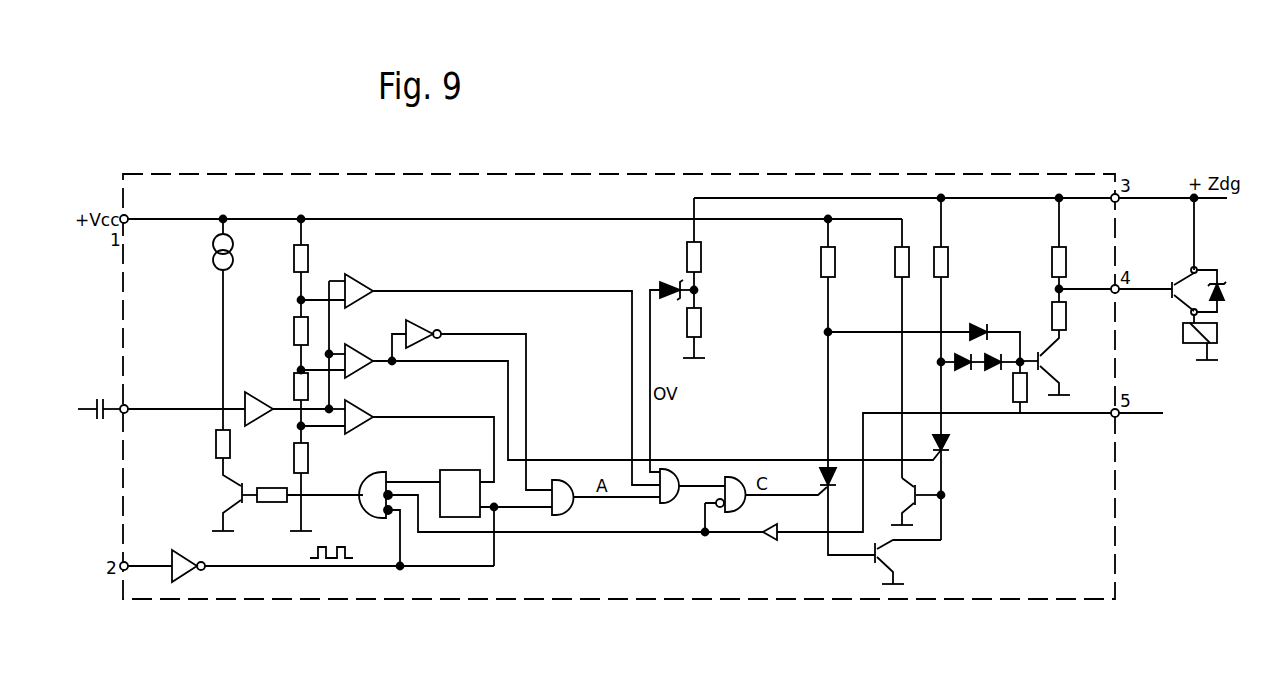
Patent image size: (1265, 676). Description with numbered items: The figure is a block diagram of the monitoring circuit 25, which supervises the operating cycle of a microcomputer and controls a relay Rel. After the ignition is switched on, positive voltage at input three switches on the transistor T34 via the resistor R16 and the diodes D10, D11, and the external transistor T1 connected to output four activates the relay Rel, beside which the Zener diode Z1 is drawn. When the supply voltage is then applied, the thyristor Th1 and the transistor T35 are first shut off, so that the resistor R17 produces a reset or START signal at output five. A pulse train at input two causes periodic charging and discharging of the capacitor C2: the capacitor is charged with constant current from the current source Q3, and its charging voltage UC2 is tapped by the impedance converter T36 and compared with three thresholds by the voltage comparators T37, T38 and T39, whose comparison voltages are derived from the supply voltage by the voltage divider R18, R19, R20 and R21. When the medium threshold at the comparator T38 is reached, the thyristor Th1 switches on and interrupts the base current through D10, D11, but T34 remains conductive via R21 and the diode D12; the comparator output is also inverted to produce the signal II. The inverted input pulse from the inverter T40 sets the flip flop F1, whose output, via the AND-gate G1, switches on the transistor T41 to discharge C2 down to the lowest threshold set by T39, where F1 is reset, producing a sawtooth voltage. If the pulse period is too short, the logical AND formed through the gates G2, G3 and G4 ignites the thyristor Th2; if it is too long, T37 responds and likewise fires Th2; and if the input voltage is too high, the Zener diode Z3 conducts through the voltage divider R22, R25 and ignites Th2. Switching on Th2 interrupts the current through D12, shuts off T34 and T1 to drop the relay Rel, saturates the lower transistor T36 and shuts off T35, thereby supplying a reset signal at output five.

The monitoring circuit 25 is at (790, 178).
The current source Q3 is at (213, 256).
The voltage divider resistor R18 is at (294, 258).
The voltage divider resistor R19 is at (294, 328).
The voltage divider resistor R20 is at (294, 384).
The resistor R21 is at (308, 462).
The voltage divider resistor R22 is at (701, 258).
The voltage divider resistor R25 is at (711, 333).
The resistor R17 is at (895, 264).
The resistor R16 is at (948, 260).
The impedance converter T36 is at (262, 417).
The voltage comparator T37 is at (360, 282).
The voltage comparator T38 is at (358, 352).
The voltage comparator T39 is at (358, 410).
The inverter T40 is at (188, 572).
The transistor T41 is at (240, 515).
The transistor T34 is at (1046, 362).
The transistor T35 is at (908, 494).
The transistor T1 is at (1168, 281).
The AND-gate G1 is at (384, 472).
The gate G2 is at (572, 505).
The gate G3 is at (658, 506).
The gate G4 is at (742, 508).
The flip flop F1 is at (460, 470).
The Zener diode Z3 is at (676, 286).
The Zener diode Z1 is at (1226, 292).
The diode D10 is at (962, 372).
The diode D11 is at (992, 372).
The diode D12 is at (980, 320).
The thyristor Th1 is at (950, 444).
The thyristor Th2 is at (812, 478).
The capacitor C2 is at (98, 398).
The charging voltage UC2 is at (82, 431).
The inverted signal II is at (462, 312).
The relay Rel is at (1186, 336).